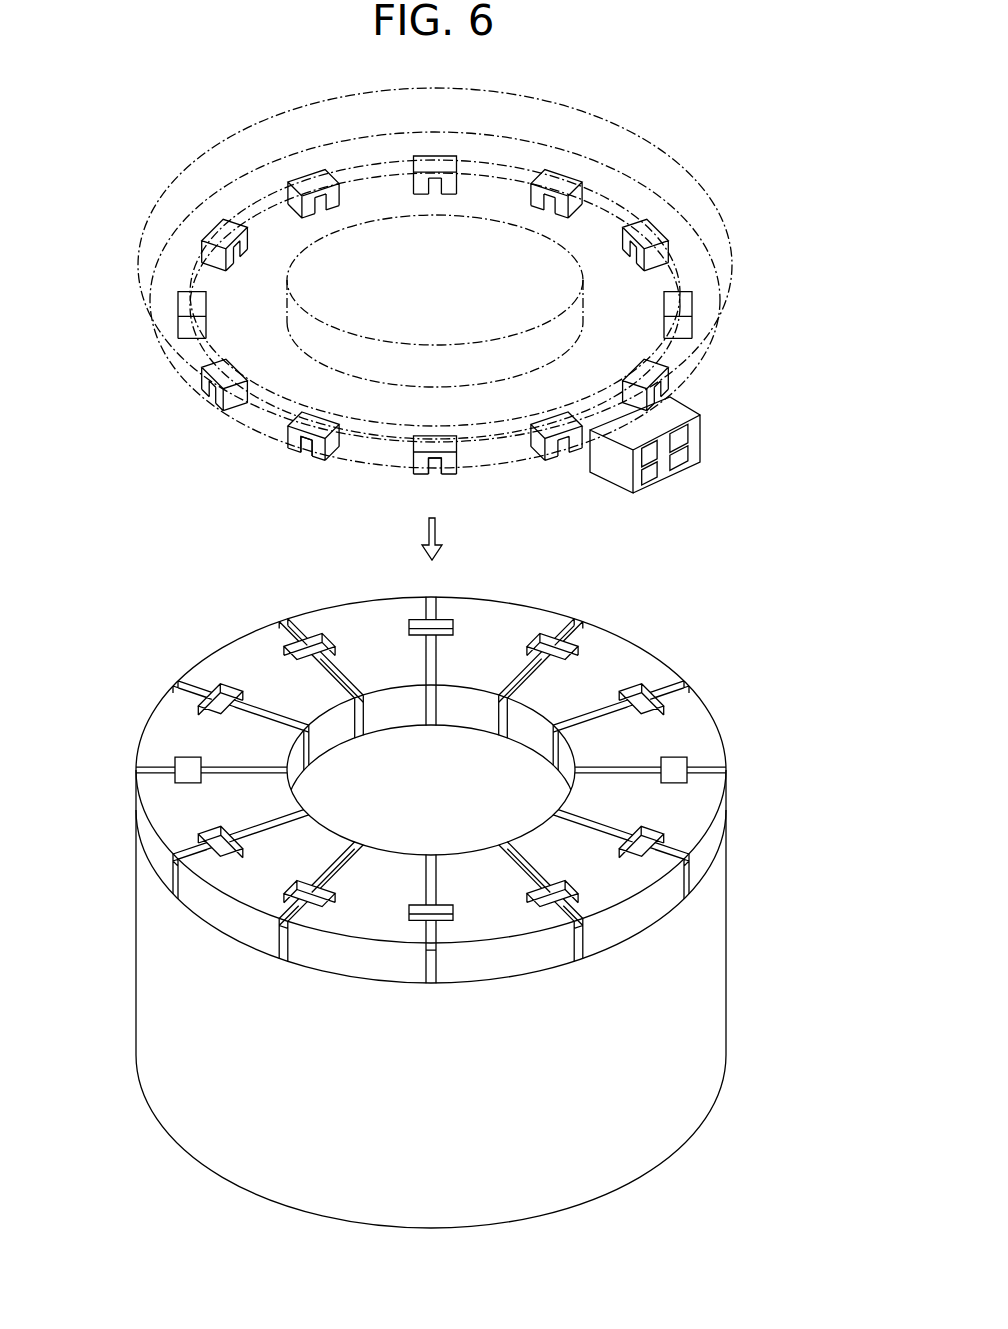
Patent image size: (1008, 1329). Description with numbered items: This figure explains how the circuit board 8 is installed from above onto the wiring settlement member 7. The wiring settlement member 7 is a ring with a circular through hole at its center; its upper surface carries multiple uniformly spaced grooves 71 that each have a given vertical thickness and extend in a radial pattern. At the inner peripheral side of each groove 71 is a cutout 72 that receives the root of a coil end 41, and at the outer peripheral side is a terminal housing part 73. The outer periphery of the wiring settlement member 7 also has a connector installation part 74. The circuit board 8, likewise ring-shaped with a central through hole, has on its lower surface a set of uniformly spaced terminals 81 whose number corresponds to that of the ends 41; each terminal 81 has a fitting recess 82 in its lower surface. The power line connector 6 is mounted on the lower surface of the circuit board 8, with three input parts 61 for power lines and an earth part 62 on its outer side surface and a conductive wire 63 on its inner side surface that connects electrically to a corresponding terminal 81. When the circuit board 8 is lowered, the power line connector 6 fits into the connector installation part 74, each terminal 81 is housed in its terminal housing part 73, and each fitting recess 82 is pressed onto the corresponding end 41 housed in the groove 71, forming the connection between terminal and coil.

The circuit board 8 is at (748, 243).
The conductive wire 63 is at (617, 203).
The terminal 81 is at (205, 378).
The fitting recess 82 is at (413, 462).
The power line connector 6 is at (680, 410).
The input parts 61 is at (680, 457).
The earth part 62 is at (648, 472).
The wiring settlement member 7 is at (748, 779).
The grooves 71 is at (575, 623).
The cutout 72 is at (431, 728).
The terminal housing part 73 is at (222, 683).
The connector installation part 74 is at (625, 900).
The end 41 is at (424, 982).